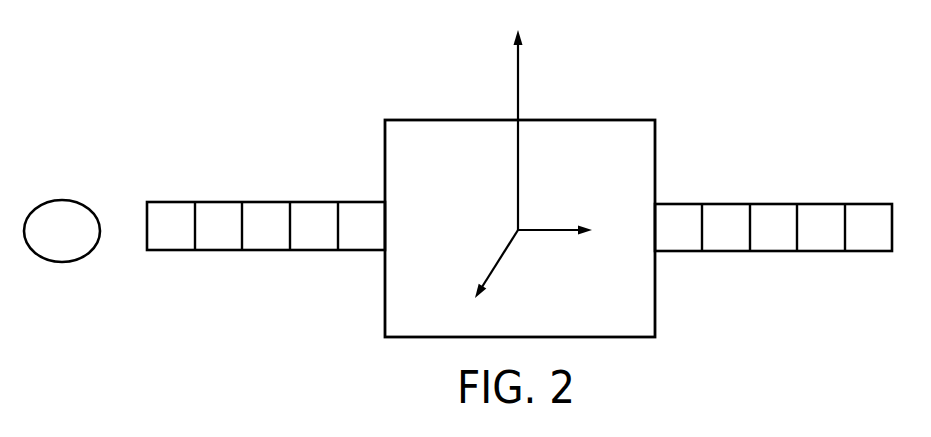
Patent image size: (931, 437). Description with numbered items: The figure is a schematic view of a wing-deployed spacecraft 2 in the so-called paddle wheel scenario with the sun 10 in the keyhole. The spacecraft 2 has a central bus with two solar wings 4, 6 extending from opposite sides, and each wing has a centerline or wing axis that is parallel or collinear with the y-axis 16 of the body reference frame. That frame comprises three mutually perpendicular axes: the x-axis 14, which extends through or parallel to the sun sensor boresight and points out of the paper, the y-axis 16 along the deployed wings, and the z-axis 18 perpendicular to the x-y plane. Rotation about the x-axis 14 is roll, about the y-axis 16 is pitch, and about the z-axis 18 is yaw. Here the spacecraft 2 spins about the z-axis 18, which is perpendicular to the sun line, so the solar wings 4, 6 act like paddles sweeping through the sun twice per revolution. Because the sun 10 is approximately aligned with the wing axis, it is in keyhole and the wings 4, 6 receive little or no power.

The spacecraft 2 is at (355, 80).
The solar wing 4 is at (268, 201).
The solar wing 6 is at (768, 204).
The sun 10 is at (62, 199).
The x-axis 14 is at (499, 258).
The y-axis 16 is at (567, 229).
The z-axis 18 is at (519, 72).